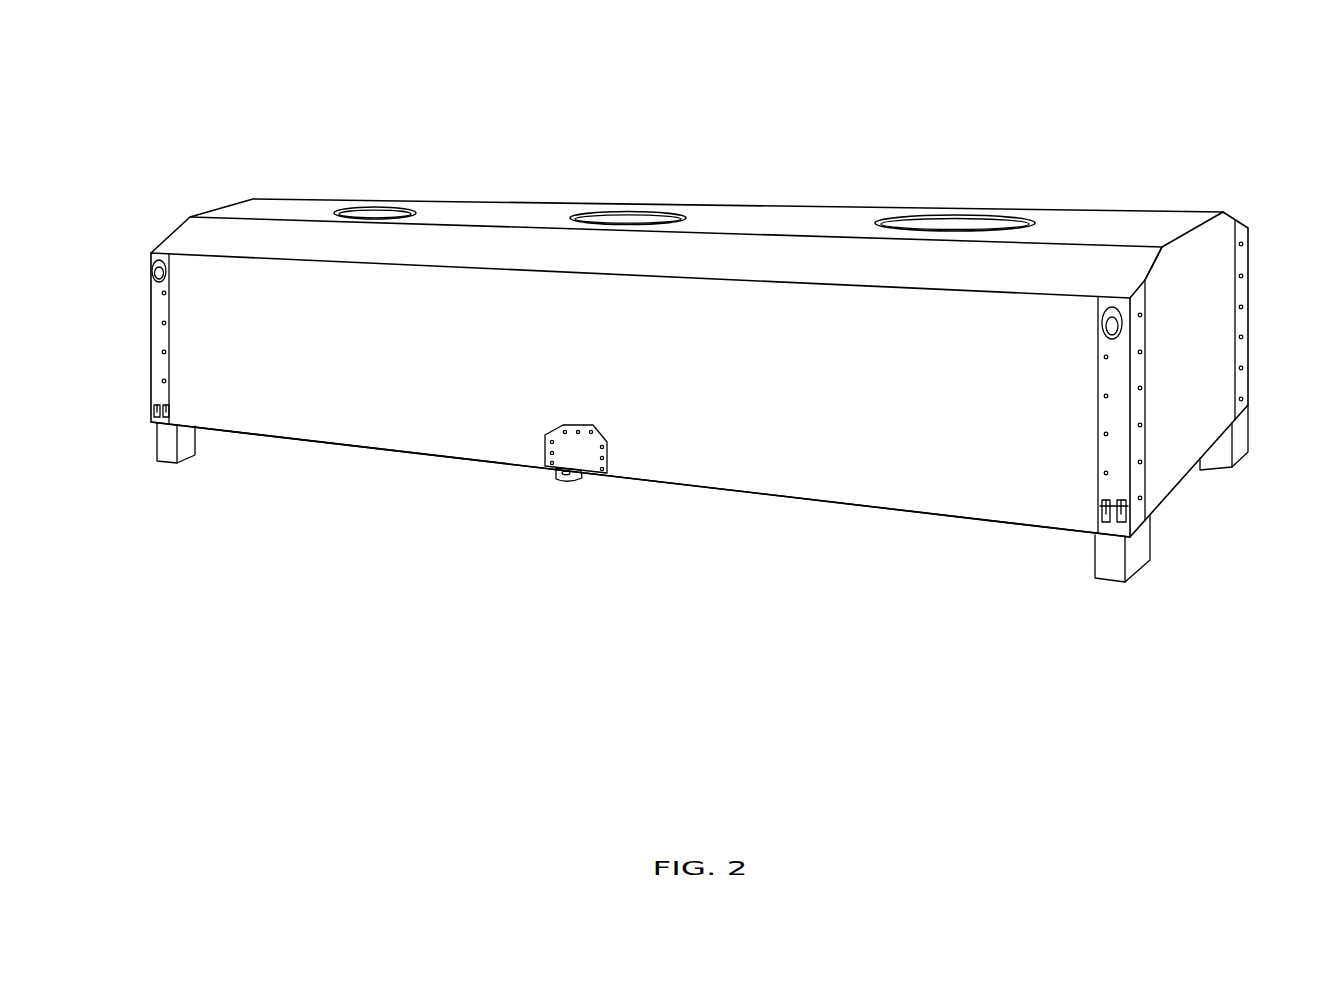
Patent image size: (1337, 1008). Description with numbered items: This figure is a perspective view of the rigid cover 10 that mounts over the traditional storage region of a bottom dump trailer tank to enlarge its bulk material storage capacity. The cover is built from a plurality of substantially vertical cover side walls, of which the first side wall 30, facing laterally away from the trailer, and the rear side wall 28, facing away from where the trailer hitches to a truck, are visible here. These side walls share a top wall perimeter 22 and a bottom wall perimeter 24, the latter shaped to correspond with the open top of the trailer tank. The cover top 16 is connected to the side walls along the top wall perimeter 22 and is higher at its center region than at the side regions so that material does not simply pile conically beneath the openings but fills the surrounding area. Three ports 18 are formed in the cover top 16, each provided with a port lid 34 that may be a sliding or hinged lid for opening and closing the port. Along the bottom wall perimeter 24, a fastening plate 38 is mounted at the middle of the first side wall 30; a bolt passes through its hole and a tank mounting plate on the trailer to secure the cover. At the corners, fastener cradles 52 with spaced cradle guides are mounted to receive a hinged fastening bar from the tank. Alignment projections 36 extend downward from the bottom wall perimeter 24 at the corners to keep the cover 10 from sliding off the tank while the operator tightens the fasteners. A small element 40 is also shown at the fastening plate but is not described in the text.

The rigid cover 10 is at (856, 122).
The cover top 16 is at (1185, 227).
The ports 18 is at (397, 209).
The top wall perimeter 22 is at (1036, 290).
The bottom wall perimeter 24 is at (858, 505).
The rear side wall 28 is at (1177, 368).
The first side wall 30 is at (733, 378).
The port lid 34 is at (355, 209).
The alignment projections 36 is at (165, 448).
The fastening plate 38 is at (590, 463).
The anchor loop 40 is at (556, 473).
The fastener cradle 52 is at (158, 405).